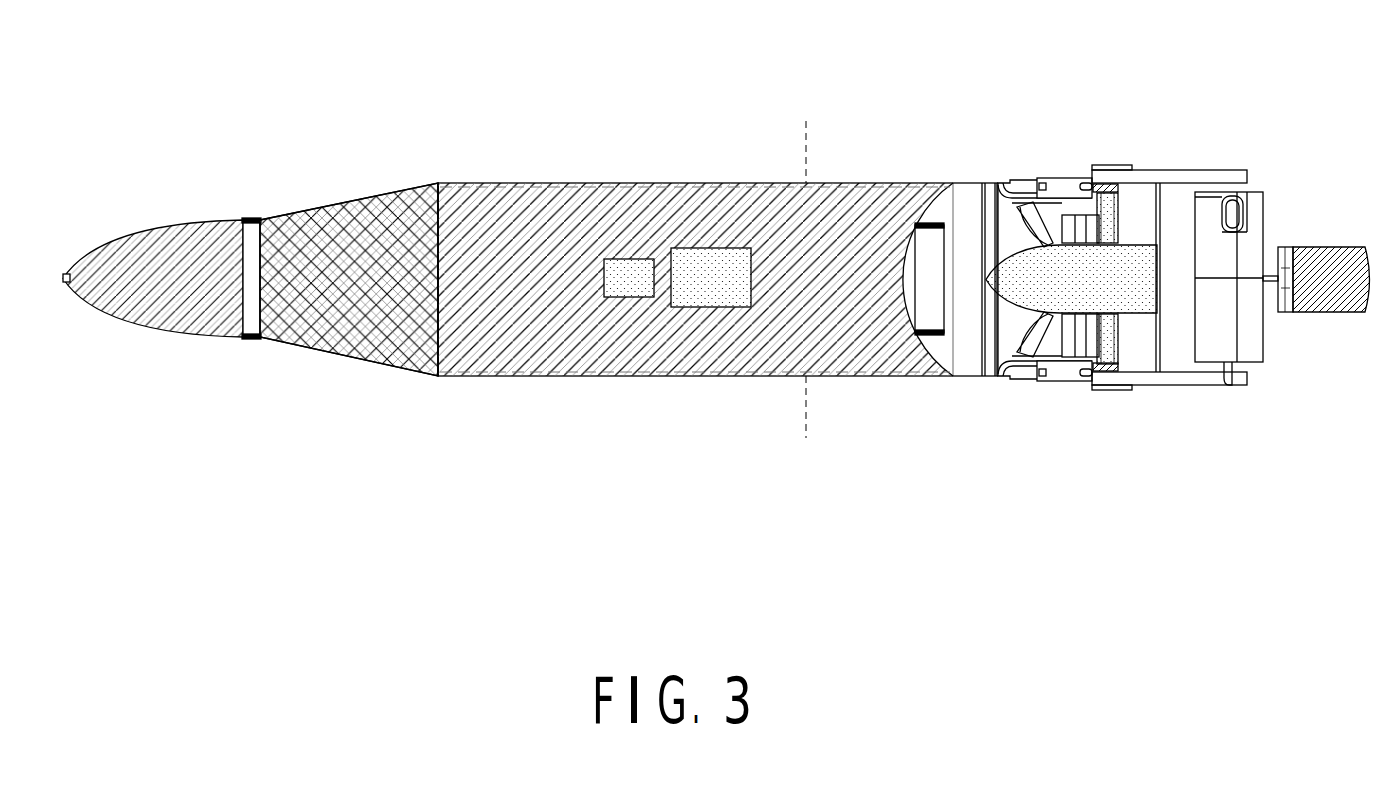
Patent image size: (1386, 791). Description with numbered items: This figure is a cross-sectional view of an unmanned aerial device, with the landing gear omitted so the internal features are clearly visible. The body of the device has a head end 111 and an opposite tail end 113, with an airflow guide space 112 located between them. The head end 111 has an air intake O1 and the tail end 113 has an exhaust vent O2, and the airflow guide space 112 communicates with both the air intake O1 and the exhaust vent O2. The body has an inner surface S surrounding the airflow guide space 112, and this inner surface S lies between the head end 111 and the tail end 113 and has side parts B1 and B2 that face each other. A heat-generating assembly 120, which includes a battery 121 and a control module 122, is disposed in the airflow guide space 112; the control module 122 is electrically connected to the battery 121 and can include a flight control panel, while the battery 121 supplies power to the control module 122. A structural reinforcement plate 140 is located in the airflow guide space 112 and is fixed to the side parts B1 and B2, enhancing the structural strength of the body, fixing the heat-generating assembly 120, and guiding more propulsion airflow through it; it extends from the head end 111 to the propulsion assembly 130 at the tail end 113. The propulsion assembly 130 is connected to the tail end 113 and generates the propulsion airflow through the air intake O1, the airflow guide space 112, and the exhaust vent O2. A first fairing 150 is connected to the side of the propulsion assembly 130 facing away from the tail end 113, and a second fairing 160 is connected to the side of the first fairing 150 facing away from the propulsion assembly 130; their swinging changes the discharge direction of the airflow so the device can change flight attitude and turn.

The head end 111 is at (438, 183).
The airflow guide space 112 is at (954, 346).
The tail end 113 is at (1013, 183).
The heat-generating assembly 120 is at (677, 185).
The battery 121 is at (690, 263).
The control module 122 is at (637, 270).
The propulsion assembly 130 is at (1066, 180).
The structural reinforcement plate 140 is at (522, 328).
The first fairing 150 is at (1255, 192).
The second fairing 160 is at (1332, 247).
The inner surface S is at (965, 192).
The air intake O1 is at (428, 352).
The exhaust vent O2 is at (983, 336).
The side part B1 is at (806, 136).
The side part B2 is at (806, 423).